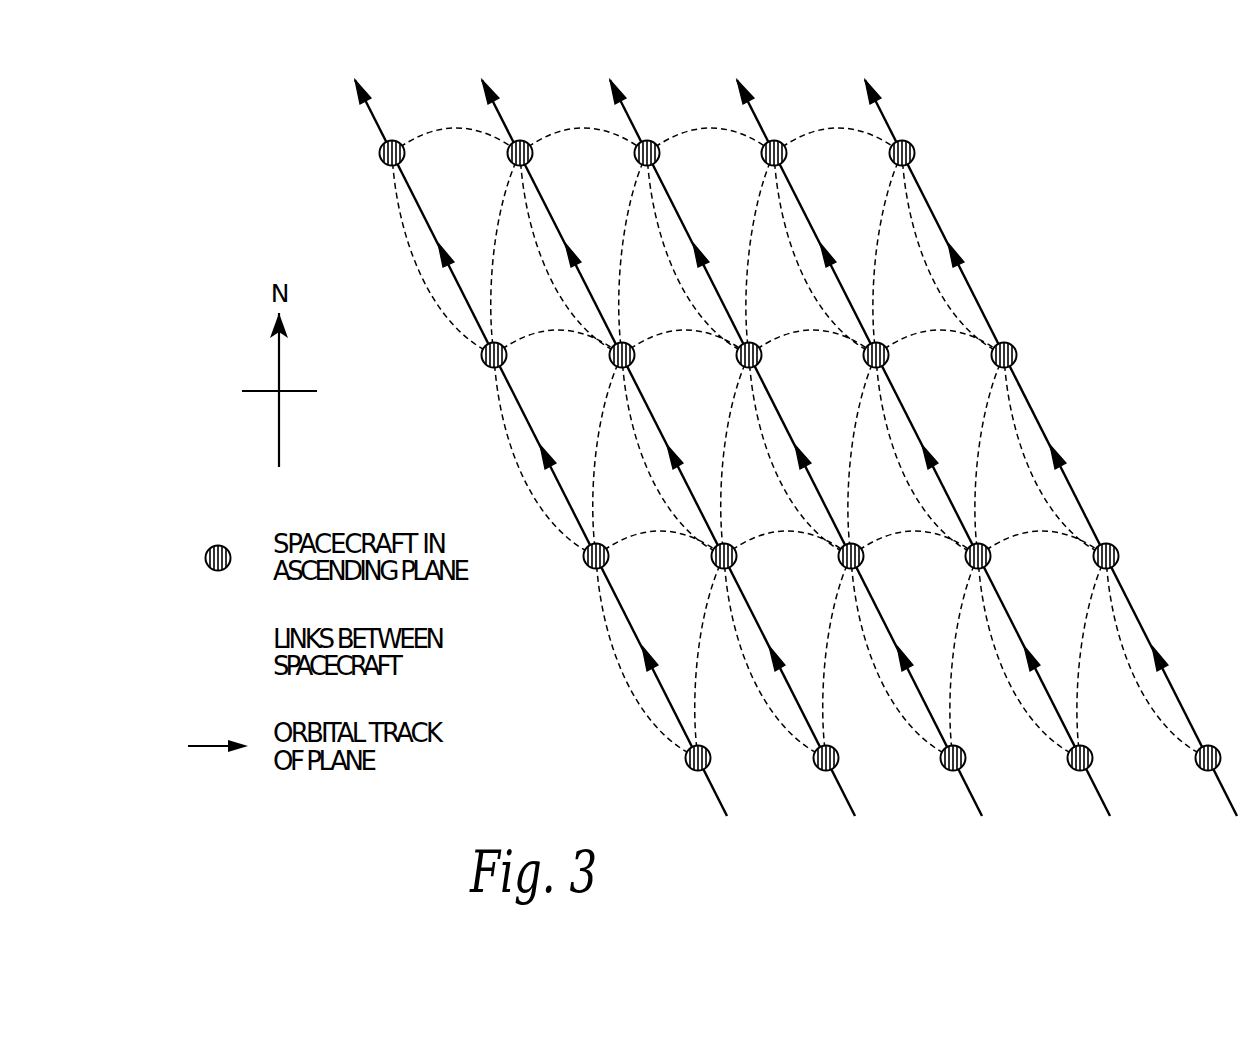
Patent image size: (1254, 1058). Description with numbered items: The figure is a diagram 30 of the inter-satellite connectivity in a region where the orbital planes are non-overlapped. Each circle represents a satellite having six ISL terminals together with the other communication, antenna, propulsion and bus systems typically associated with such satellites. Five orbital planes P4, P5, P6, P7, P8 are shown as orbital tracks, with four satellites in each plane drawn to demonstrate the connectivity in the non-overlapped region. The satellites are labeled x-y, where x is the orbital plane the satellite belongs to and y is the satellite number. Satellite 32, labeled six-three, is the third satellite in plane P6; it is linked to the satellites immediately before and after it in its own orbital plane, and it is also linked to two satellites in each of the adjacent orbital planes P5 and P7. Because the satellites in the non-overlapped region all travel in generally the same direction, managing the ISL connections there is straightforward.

The inter-satellite connectivity diagram 30 is at (786, 432).
The satellite 32 is at (752, 343).
The orbital plane P4 is at (533, 432).
The orbital plane P5 is at (661, 432).
The orbital plane P6 is at (788, 432).
The orbital plane P7 is at (915, 432).
The orbital plane P8 is at (1060, 162).